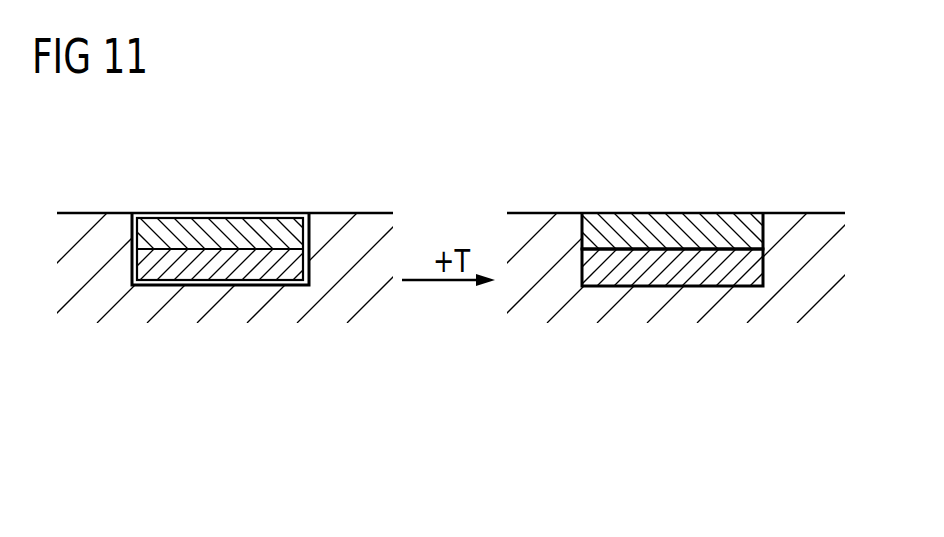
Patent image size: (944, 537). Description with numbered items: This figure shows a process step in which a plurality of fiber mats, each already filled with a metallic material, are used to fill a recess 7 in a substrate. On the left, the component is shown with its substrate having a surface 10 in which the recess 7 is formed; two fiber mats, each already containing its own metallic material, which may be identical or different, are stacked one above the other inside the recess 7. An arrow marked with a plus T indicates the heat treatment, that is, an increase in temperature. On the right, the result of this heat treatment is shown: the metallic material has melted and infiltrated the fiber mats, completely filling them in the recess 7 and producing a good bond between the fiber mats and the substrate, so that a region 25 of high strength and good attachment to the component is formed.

The surface 10 is at (80, 212).
The recess 7 is at (318, 228).
The region 25 is at (729, 270).